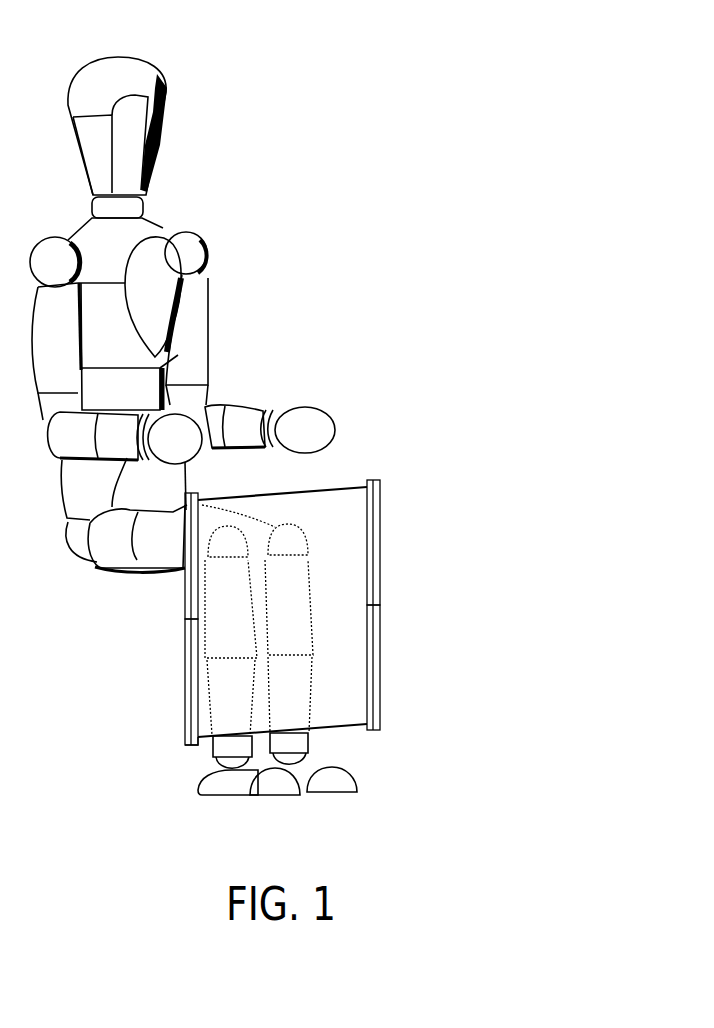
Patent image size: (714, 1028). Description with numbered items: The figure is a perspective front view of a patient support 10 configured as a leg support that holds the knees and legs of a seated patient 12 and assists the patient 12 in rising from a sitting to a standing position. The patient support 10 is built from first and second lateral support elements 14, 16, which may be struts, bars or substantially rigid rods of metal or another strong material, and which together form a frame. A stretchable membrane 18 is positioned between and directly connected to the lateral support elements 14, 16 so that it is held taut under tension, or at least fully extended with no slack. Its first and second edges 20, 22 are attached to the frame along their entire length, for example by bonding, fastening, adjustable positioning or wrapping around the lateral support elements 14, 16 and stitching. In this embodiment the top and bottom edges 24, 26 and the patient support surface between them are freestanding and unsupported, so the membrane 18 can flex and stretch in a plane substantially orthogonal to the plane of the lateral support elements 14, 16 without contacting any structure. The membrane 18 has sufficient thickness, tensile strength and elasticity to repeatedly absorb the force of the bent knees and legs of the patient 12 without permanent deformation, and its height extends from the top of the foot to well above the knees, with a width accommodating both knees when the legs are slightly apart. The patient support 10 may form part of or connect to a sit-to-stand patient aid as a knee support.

The patient support 10 is at (352, 576).
The patient 12 is at (405, 73).
The first lateral support element 14 is at (381, 613).
The second lateral support element 16 is at (183, 617).
The stretchable membrane 18 is at (345, 730).
The first edge 20 is at (381, 678).
The second edge 22 is at (182, 686).
The top edge 24 is at (330, 487).
The bottom edge 26 is at (205, 742).